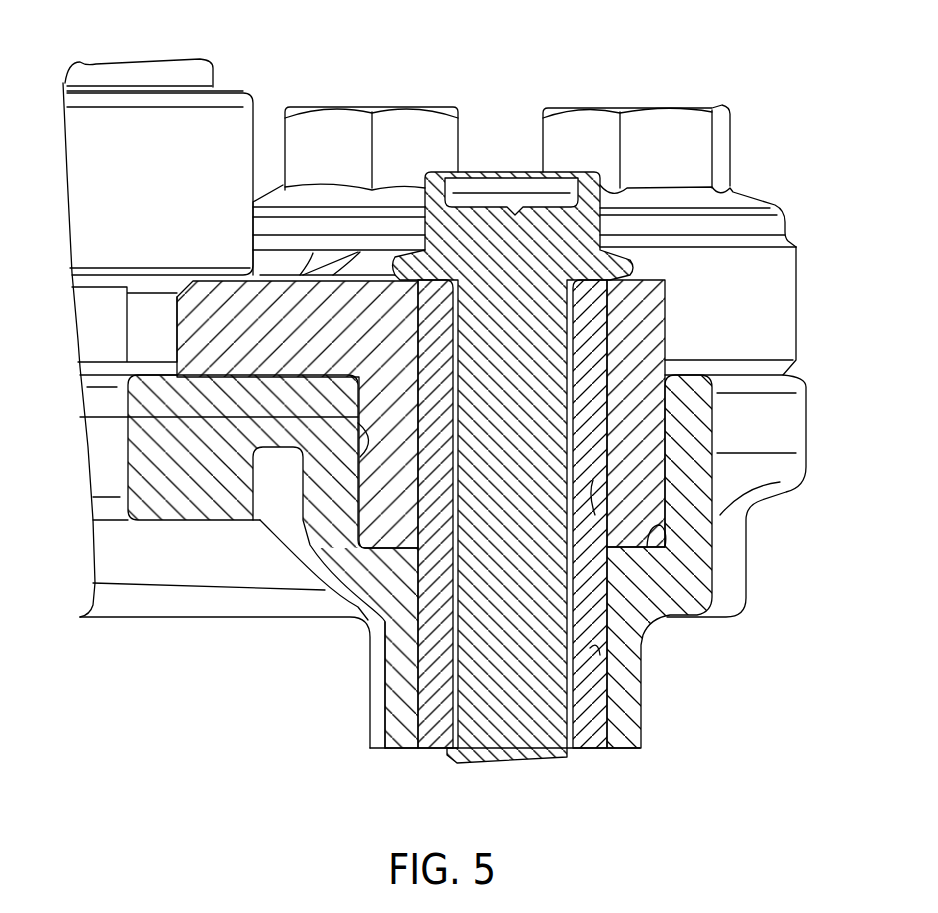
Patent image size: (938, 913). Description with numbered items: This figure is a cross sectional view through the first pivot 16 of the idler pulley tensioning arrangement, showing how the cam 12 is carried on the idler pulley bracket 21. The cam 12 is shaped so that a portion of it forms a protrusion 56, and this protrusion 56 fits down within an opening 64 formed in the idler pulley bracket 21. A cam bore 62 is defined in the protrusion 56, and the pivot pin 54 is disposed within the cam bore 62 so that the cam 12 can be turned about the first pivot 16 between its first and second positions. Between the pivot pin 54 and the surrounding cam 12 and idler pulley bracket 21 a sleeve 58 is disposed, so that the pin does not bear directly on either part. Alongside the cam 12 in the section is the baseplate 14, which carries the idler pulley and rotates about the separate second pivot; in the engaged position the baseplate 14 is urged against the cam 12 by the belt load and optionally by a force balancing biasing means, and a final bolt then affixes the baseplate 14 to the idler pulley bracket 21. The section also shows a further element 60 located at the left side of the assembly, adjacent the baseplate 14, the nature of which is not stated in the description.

The cam 12 is at (380, 395).
The baseplate 14 is at (82, 180).
The first pivot 16 is at (533, 92).
The idler pulley bracket 21 is at (408, 733).
The pivot pin 54 is at (515, 747).
The protrusion 56 is at (637, 473).
The sleeve 58 is at (585, 325).
The bracket 60 is at (80, 417).
The cam bore 62 is at (592, 480).
The opening 64 is at (593, 650).